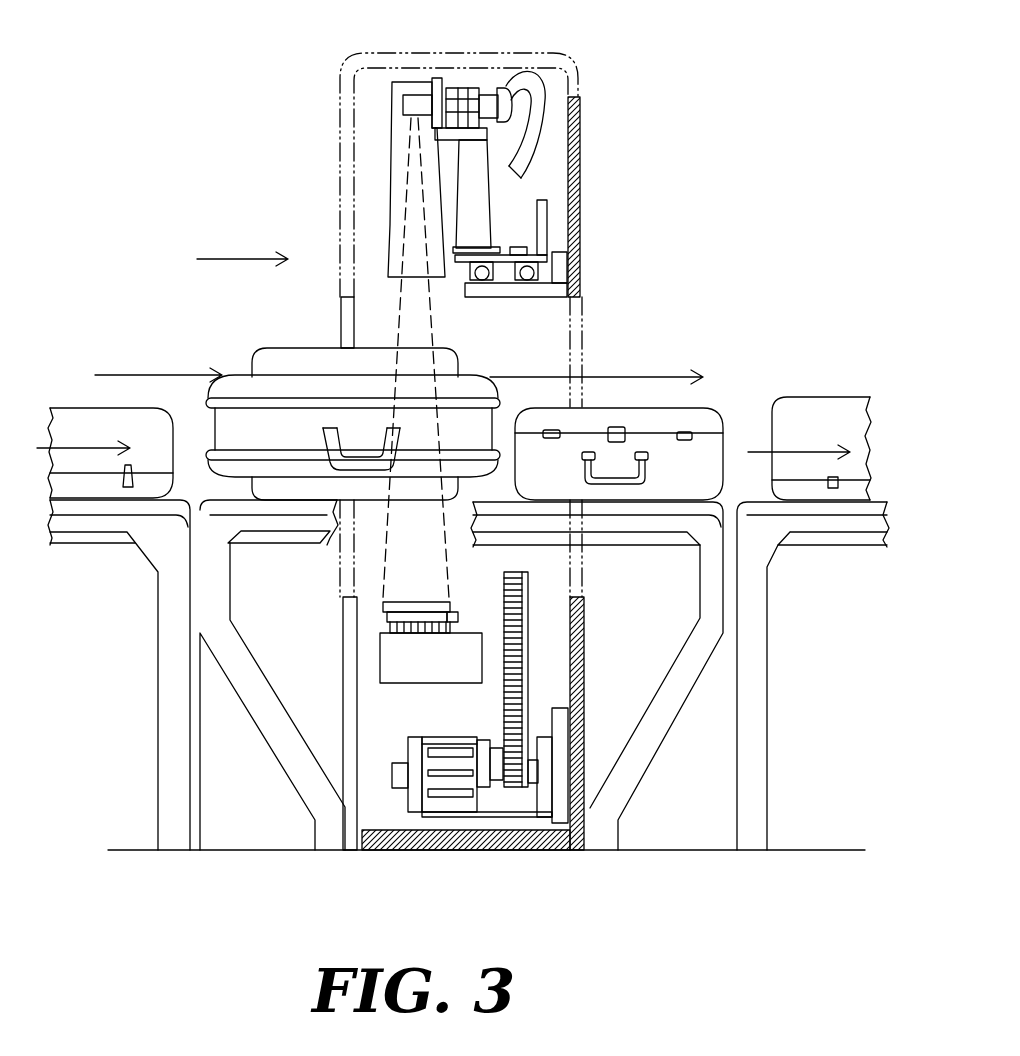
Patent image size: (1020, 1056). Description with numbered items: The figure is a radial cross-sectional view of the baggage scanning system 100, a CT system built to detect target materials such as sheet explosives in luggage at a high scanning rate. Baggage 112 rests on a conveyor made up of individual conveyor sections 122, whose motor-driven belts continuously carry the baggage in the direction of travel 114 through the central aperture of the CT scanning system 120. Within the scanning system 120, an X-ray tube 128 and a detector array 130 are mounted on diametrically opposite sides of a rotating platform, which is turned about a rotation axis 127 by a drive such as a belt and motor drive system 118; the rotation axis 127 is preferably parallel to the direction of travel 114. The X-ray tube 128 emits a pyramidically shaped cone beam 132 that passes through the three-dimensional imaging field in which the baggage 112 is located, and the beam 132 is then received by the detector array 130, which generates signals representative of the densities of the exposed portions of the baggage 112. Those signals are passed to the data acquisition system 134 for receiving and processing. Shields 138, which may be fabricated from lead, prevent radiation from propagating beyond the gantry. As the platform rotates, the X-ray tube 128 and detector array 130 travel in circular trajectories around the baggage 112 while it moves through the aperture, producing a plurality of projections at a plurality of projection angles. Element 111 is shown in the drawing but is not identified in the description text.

The baggage scanning system 100 is at (758, 905).
The rack 111 is at (530, 668).
The baggage 112 is at (303, 350).
The direction of travel 114 is at (238, 258).
The motor drive system 118 is at (477, 815).
The CT scanning system 120 is at (413, 50).
The conveyor sections 122 is at (767, 665).
The rotation axis 127 is at (150, 373).
The X-ray tube 128 is at (468, 92).
The detector array 130 is at (410, 600).
The cone beam 132 is at (440, 335).
The data acquisition system 134 is at (390, 681).
The shields 138 is at (388, 617).